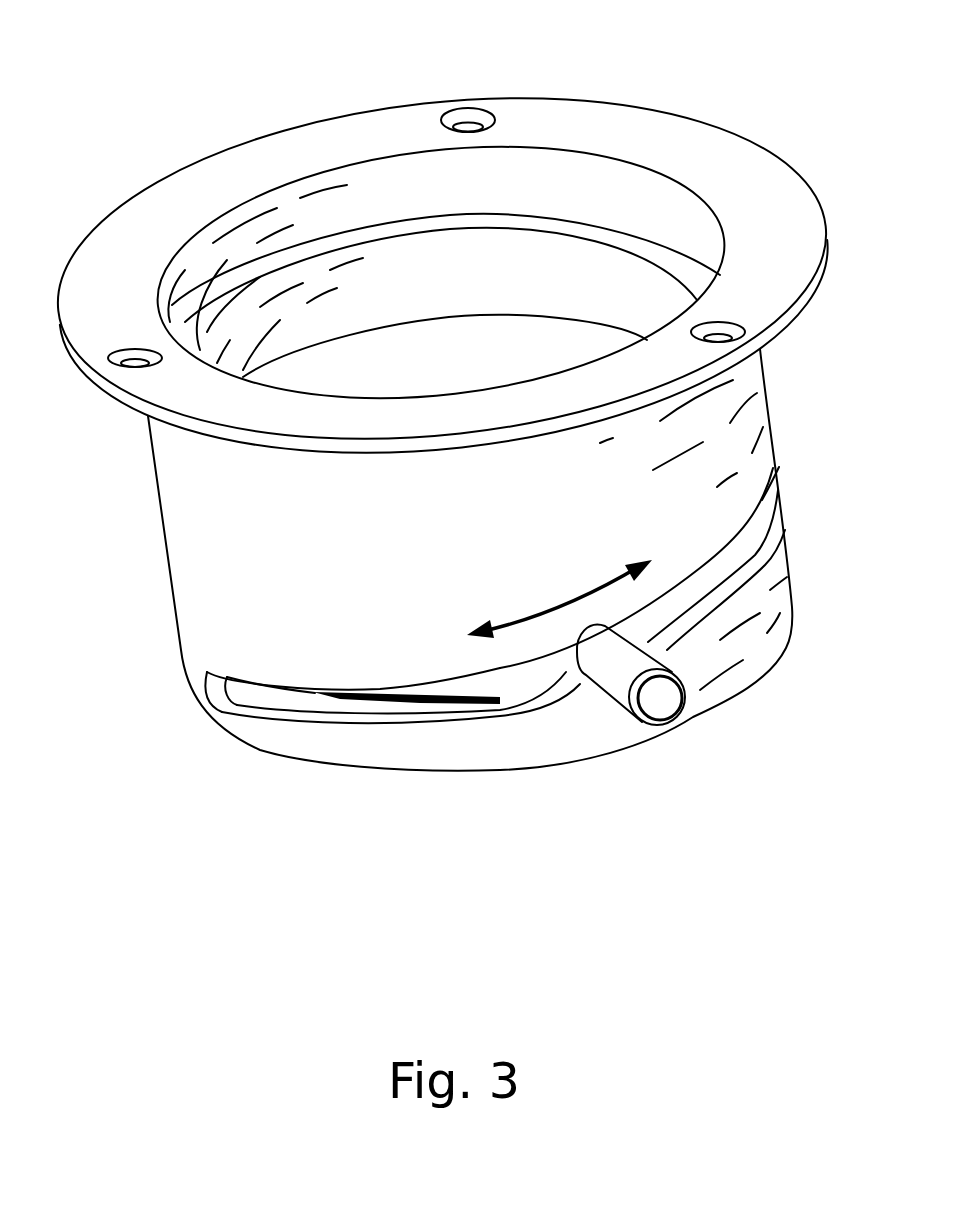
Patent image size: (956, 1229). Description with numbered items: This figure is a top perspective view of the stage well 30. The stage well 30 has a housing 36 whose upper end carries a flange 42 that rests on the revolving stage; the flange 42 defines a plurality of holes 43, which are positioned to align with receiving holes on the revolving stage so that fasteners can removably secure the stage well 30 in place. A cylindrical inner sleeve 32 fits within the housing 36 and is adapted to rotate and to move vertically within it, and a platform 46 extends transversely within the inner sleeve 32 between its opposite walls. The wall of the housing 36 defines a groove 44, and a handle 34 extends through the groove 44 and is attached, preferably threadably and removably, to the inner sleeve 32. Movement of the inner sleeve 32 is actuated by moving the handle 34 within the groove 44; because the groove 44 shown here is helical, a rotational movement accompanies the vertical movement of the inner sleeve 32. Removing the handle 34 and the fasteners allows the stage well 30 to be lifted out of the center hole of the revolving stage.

The stage well 30 is at (182, 129).
The inner sleeve 32 is at (417, 268).
The handle 34 is at (660, 697).
The housing 36 is at (227, 558).
The flange 42 is at (123, 303).
The holes 43 is at (473, 118).
The groove 44 is at (347, 725).
The platform 46 is at (485, 362).